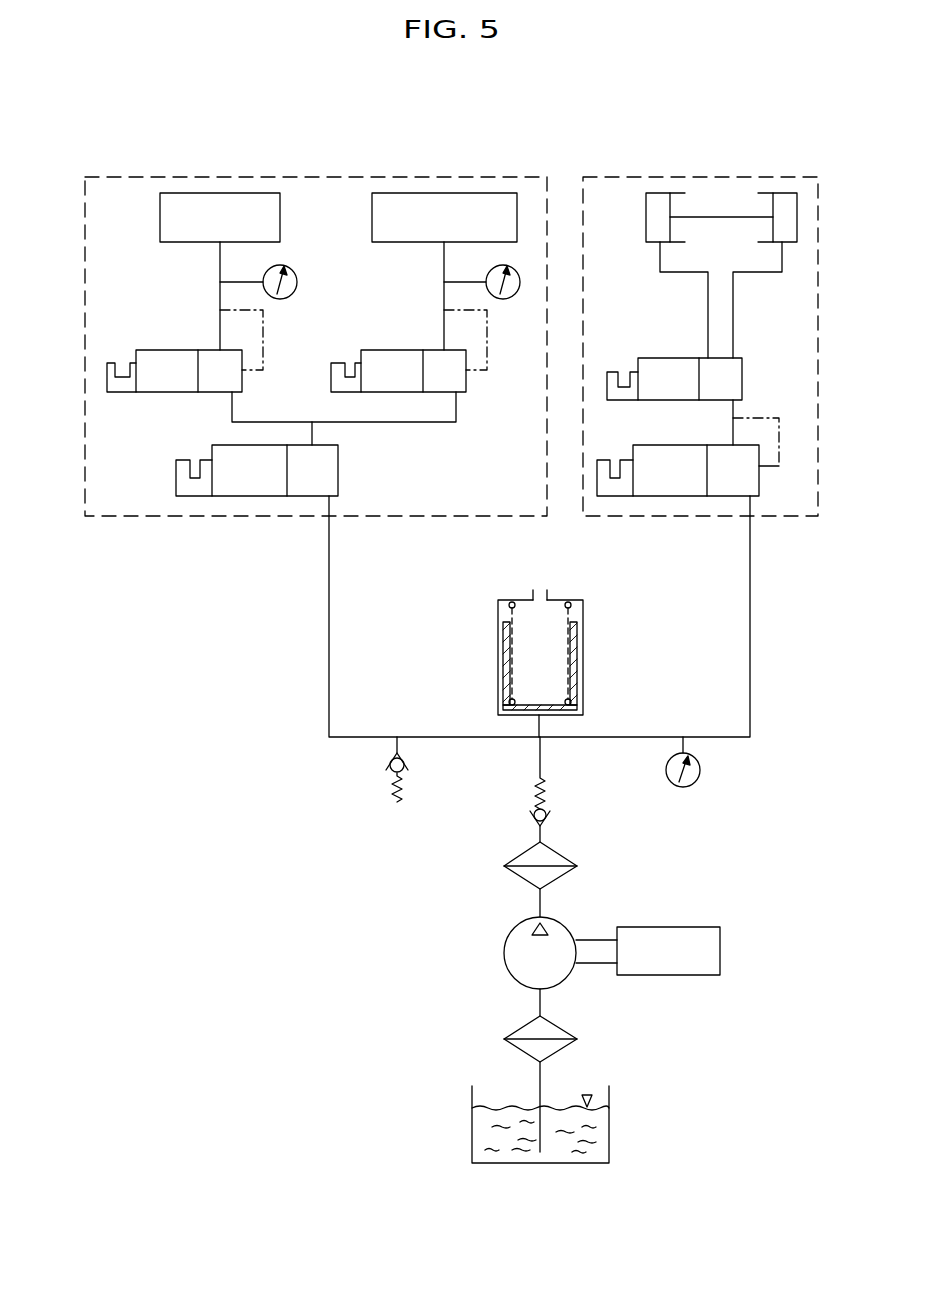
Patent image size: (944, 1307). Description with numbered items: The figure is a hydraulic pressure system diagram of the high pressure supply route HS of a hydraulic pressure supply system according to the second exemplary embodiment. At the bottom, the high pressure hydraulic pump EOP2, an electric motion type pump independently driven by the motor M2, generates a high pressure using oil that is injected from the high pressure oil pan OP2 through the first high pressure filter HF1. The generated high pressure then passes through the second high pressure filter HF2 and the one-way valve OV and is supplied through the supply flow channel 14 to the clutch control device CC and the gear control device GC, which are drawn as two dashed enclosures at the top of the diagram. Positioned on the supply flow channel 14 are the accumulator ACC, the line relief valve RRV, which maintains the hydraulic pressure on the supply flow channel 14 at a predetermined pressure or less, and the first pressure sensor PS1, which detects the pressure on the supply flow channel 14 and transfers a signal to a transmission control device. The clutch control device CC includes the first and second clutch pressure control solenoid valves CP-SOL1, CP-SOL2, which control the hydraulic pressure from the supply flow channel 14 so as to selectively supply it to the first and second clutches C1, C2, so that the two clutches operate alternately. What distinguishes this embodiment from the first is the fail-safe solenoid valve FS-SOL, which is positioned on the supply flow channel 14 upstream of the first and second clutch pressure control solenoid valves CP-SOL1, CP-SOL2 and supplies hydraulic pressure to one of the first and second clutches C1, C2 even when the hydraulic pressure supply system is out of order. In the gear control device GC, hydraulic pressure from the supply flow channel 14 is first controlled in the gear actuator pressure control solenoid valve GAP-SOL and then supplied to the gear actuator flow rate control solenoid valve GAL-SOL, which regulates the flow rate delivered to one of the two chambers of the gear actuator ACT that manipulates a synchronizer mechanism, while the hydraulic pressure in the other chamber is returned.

The clutch control device CC is at (356, 142).
The gear control device GC is at (632, 142).
The first clutch C1 is at (256, 183).
The second clutch C2 is at (474, 183).
The gear actuator ACT is at (773, 182).
The first clutch pressure control solenoid valve CP-SOL1 is at (152, 338).
The second clutch pressure control solenoid valve CP-SOL2 is at (383, 338).
The fail-safe solenoid valve FS-SOL is at (208, 512).
The gear actuator flow rate control solenoid valve GAL-SOL is at (654, 347).
The gear actuator pressure control solenoid valve GAP-SOL is at (642, 512).
The supply flow channel 14 is at (625, 736).
The accumulator ACC is at (478, 622).
The line relief valve RRV is at (372, 783).
The first pressure sensor PS1 is at (696, 782).
The one-way valve OV is at (520, 820).
The second high pressure filter HF2 is at (570, 857).
The high pressure hydraulic pump EOP2 is at (505, 976).
The motor M2 is at (648, 951).
The first high pressure filter HF1 is at (567, 1047).
The high pressure oil pan OP2 is at (609, 1139).
The high pressure supply route HS is at (208, 965).